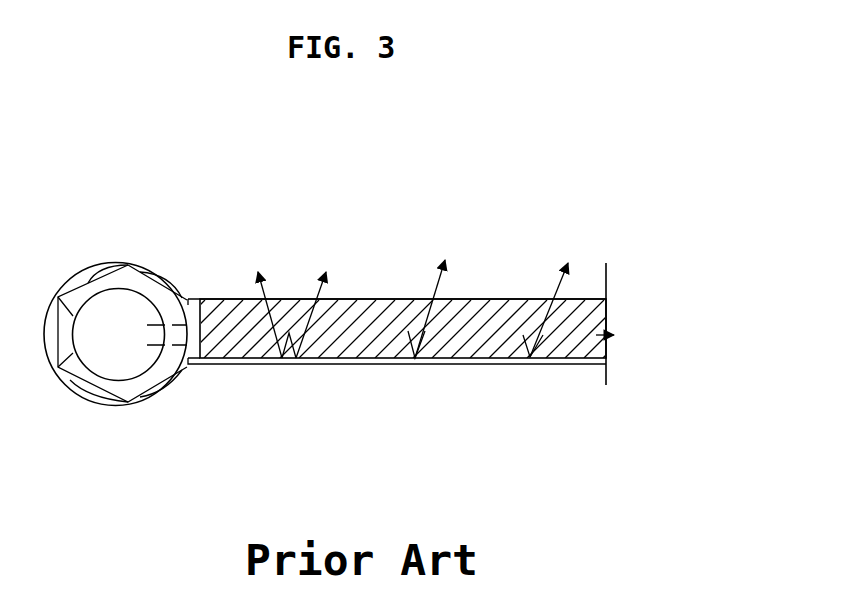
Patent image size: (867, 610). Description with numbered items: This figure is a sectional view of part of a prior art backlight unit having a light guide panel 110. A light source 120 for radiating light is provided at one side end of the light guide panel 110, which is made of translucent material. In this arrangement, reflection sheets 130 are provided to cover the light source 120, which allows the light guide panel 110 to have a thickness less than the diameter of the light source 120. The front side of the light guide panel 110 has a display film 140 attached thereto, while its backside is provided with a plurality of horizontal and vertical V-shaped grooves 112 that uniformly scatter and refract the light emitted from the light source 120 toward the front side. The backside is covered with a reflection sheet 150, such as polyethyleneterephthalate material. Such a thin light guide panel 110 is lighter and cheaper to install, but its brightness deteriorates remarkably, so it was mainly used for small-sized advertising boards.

The light guide panel 110 is at (606, 310).
The V-shaped grooves 112 is at (530, 360).
The light source 120 is at (113, 350).
The reflection sheets 130 is at (128, 264).
The display film 140 is at (455, 300).
The reflection sheet 150 is at (352, 365).